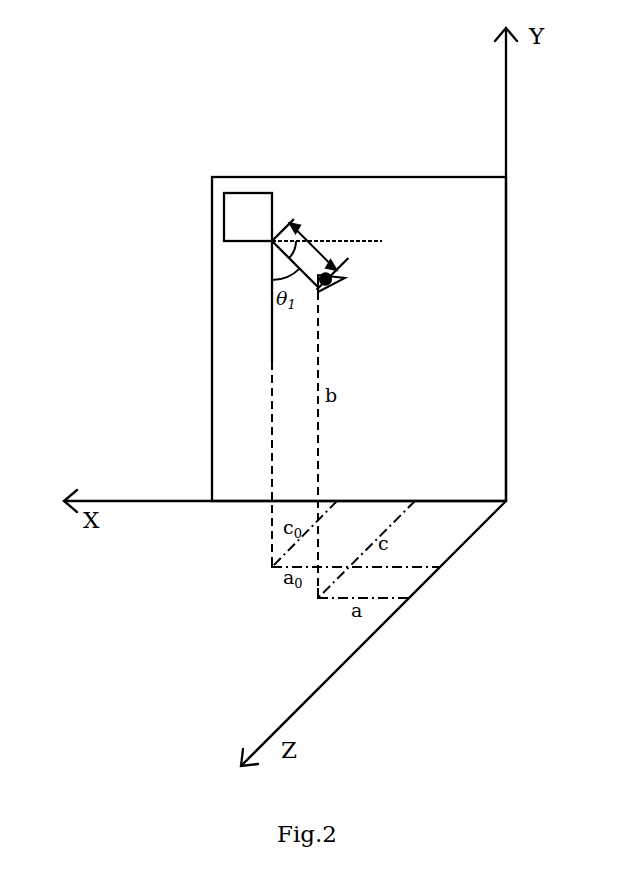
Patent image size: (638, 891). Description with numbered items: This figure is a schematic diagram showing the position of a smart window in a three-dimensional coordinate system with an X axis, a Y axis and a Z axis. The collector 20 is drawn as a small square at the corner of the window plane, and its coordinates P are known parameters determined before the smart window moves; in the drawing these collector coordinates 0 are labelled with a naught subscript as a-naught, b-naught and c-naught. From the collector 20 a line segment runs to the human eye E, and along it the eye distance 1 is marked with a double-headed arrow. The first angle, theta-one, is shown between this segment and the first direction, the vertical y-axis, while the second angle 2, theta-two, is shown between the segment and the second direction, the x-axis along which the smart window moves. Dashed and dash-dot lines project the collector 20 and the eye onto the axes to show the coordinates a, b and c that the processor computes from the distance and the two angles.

The collector 20 is at (243, 207).
The distance from corner to sensor 1 is at (313, 243).
The angle theta 2 is at (303, 255).
The vertical distance b0 0 is at (283, 464).